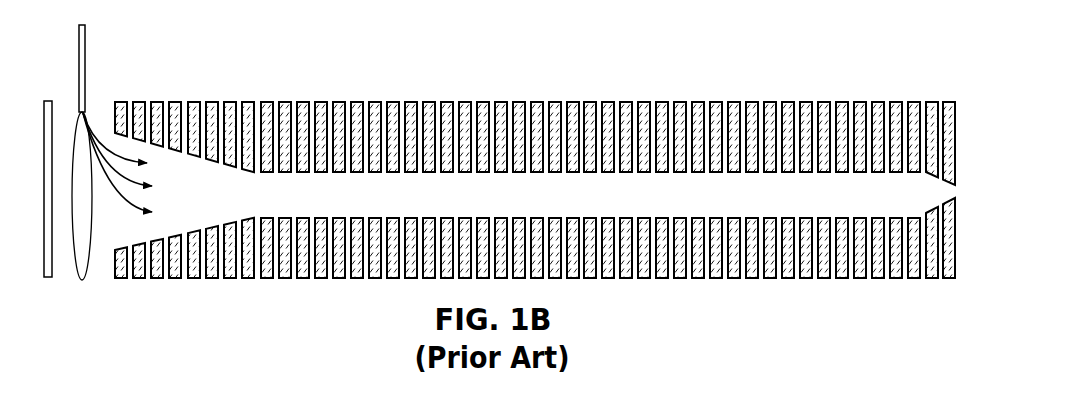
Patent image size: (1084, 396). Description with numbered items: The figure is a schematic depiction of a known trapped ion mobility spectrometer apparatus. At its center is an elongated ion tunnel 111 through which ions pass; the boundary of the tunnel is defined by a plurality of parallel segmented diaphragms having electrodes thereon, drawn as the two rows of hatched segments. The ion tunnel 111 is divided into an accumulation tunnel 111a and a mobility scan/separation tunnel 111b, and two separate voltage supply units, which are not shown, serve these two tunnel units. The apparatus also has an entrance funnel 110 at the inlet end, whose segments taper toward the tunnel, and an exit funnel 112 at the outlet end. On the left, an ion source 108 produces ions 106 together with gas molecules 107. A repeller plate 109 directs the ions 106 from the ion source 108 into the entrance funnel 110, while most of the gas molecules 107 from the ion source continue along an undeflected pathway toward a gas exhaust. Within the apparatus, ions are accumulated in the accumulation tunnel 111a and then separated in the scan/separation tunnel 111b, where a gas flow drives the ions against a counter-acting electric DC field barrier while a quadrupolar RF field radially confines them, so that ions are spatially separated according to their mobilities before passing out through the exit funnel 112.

The ions 106 is at (140, 162).
The gas molecules 107 is at (83, 278).
The ion source 108 is at (85, 43).
The repeller plate 109 is at (47, 277).
The entrance funnel 110 is at (115, 94).
The ion tunnel 111 is at (591, 167).
The accumulation tunnel 111a is at (260, 94).
The mobility scan/separation tunnel 111b is at (753, 167).
The exit funnel 112 is at (926, 88).